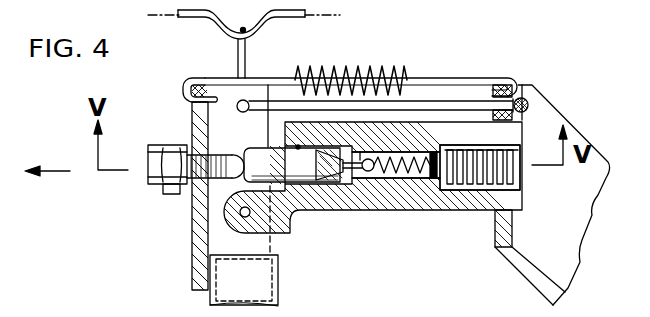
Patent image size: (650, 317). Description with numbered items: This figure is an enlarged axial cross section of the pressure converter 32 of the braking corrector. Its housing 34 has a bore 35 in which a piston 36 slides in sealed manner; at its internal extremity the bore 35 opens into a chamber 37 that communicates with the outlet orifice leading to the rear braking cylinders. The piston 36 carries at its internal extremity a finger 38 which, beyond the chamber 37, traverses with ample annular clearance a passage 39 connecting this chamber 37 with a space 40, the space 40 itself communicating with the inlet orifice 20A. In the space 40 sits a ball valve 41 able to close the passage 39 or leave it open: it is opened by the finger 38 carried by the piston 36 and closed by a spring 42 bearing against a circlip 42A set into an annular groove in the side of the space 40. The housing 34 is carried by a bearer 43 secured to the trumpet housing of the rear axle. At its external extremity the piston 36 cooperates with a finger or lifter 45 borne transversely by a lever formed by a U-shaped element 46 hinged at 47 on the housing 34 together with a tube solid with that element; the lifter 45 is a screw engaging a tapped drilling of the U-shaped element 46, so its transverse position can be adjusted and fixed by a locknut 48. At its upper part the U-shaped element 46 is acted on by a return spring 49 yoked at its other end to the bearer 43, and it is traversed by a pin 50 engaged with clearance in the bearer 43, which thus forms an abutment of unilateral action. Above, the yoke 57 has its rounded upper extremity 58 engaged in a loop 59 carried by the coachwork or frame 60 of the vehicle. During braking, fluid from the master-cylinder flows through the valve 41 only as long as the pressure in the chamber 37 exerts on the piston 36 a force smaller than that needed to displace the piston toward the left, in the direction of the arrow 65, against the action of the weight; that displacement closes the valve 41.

The inlet orifice 20A is at (522, 190).
The pressure converter 32 is at (525, 75).
The housing 34 is at (524, 136).
The bore 35 is at (297, 200).
The piston 36 is at (293, 163).
The chamber 37 is at (350, 178).
The finger 38 is at (366, 182).
The passage 39 is at (392, 184).
The space 40 is at (418, 152).
The ball valve 41 is at (371, 156).
The spring 42 is at (421, 192).
The circlip 42A is at (435, 186).
The bearer 43 is at (512, 268).
The finger or lifter 45 is at (228, 153).
The U-shaped element 46 is at (196, 231).
The hinge 47 is at (254, 219).
The locknut 48 is at (166, 143).
The return spring 49 is at (377, 66).
The pin 50 is at (458, 100).
The yoke 57 is at (239, 50).
The upper extremity 58 is at (246, 33).
The loop 59 is at (258, 28).
The coachwork or frame 60 is at (163, 17).
The arrow 65 is at (58, 173).